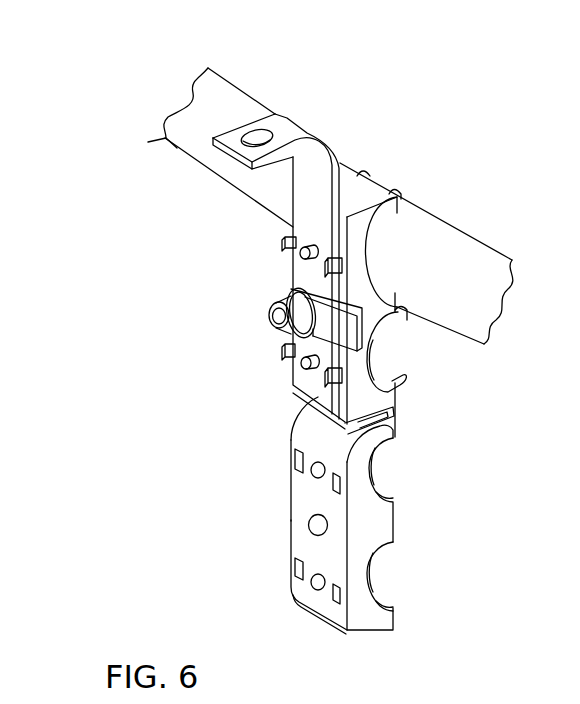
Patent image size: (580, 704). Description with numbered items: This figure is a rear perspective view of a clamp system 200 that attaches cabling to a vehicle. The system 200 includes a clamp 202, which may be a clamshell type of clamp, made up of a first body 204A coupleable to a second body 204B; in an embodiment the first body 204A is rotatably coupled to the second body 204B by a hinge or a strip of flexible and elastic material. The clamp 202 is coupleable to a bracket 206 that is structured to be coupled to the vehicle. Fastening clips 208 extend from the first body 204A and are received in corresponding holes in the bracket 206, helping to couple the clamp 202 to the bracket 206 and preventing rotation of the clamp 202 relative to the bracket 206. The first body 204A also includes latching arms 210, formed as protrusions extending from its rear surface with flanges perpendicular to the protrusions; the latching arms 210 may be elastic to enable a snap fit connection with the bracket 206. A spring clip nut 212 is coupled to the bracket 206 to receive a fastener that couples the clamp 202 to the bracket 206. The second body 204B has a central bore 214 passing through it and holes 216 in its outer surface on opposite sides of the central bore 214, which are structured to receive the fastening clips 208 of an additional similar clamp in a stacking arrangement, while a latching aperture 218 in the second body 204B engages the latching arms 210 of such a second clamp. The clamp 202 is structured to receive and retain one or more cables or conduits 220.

The clamp system 200 is at (115, 62).
The clamp 202 is at (229, 441).
The first body 204A is at (373, 310).
The second body 204B is at (367, 622).
The bracket 206 is at (302, 130).
The fastening clips 208 is at (300, 256).
The latching arms 210 is at (282, 242).
The spring clip nut 212 is at (272, 320).
The central bore 214 is at (306, 523).
The holes 216 is at (326, 467).
The latching aperture 218 is at (326, 489).
The cables or conduits 220 is at (452, 257).